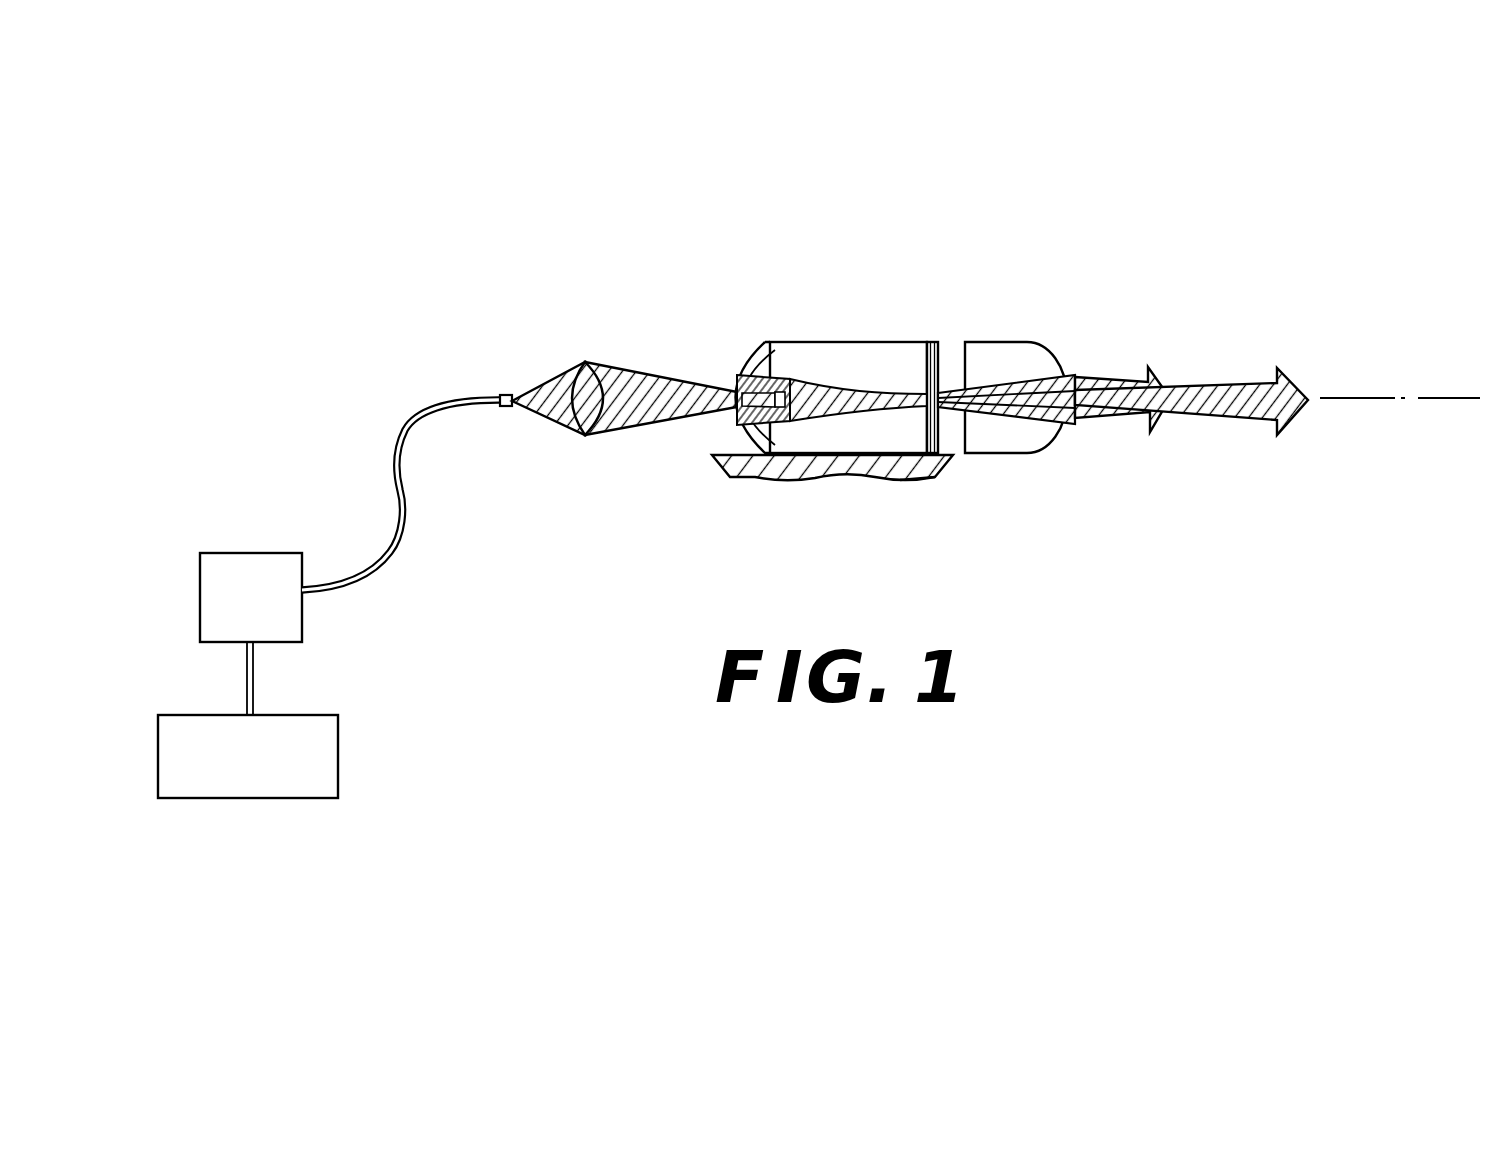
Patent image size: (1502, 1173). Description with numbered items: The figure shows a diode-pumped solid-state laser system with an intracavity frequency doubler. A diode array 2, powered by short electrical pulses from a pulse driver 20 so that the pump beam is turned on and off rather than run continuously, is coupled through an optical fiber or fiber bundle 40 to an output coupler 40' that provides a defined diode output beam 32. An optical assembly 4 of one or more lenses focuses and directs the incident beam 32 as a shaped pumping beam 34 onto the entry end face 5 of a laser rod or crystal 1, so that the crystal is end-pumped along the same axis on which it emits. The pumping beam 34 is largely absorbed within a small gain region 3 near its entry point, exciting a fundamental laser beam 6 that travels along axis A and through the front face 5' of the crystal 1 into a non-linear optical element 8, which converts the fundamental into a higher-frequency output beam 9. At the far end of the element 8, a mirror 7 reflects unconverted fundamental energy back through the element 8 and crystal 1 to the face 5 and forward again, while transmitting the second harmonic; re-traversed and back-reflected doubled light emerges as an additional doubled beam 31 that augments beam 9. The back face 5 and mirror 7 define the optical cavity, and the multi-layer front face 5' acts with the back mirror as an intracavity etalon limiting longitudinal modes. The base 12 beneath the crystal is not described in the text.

The laser rod or crystal 1 is at (857, 442).
The diode array 2 is at (258, 603).
The gain region 3 is at (770, 385).
The optical assembly 4 is at (585, 410).
The entry end face 5 is at (821, 481).
The front face 5' is at (958, 374).
The fundamental laser beam 6 is at (885, 394).
The mirror 7 is at (1074, 420).
The non-linear optical element 8 is at (1010, 342).
The output beam 9 is at (1222, 422).
The mount base 12 is at (928, 478).
The pulse driver 20 is at (310, 715).
The doubled beam 31 is at (1155, 382).
The diode output beam 32 is at (547, 382).
The pumping beam 34 is at (647, 373).
The optical fiber or fiber bundle 40 is at (403, 495).
The output coupler 40' is at (479, 374).
The axis A is at (1378, 398).